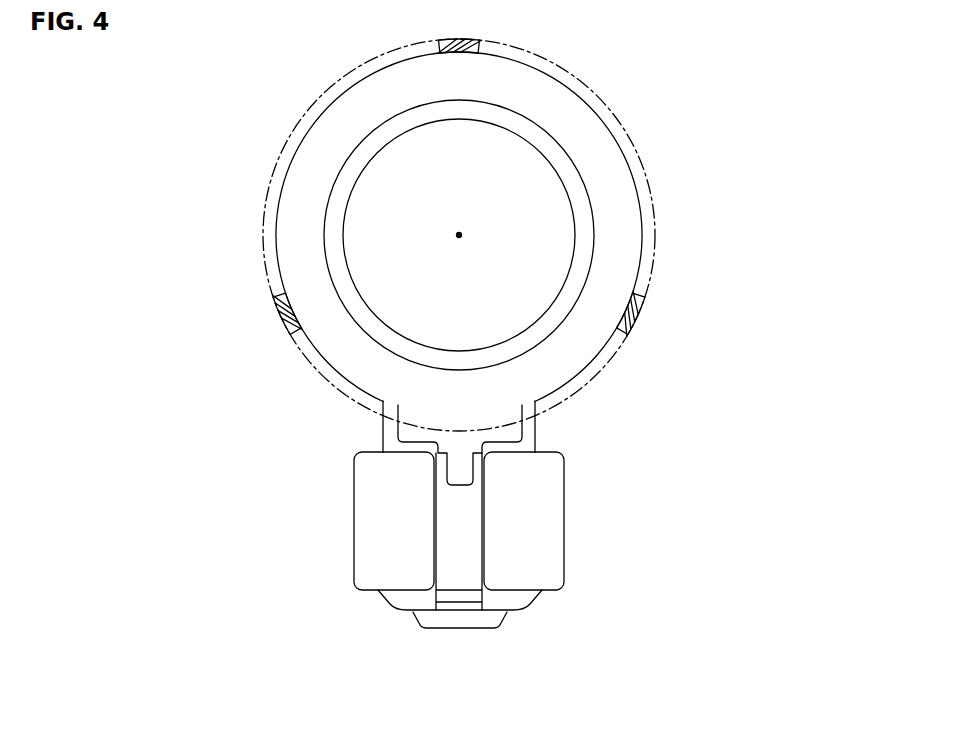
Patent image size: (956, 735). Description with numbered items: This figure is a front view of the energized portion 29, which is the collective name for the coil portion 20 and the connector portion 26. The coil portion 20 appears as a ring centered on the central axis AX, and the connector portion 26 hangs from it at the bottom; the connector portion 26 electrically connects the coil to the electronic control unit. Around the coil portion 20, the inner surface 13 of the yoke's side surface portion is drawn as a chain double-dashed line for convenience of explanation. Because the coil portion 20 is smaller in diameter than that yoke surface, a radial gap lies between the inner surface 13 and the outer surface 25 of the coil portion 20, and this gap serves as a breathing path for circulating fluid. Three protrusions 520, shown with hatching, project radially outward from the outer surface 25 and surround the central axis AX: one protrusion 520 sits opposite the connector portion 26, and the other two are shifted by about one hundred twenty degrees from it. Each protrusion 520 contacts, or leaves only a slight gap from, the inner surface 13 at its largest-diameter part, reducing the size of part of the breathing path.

The inner surface 13 is at (607, 112).
The coil portion 20 is at (582, 347).
The outer surface 25 is at (643, 227).
The connector portion 26 is at (537, 542).
The energized portion 29 is at (777, 52).
The protrusions 520 is at (477, 37).
The central axis AX is at (459, 235).